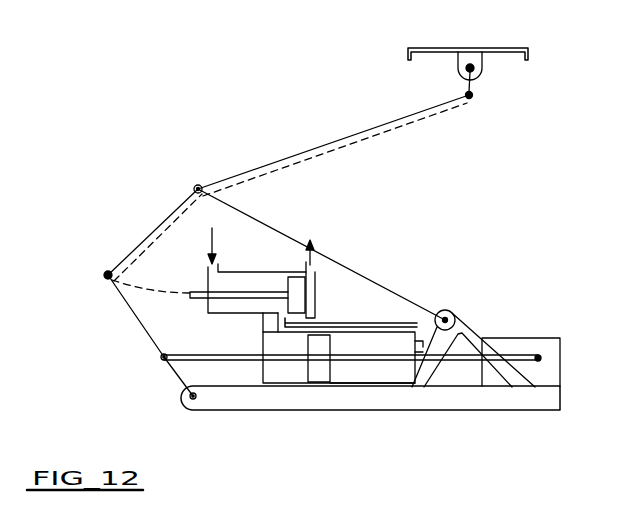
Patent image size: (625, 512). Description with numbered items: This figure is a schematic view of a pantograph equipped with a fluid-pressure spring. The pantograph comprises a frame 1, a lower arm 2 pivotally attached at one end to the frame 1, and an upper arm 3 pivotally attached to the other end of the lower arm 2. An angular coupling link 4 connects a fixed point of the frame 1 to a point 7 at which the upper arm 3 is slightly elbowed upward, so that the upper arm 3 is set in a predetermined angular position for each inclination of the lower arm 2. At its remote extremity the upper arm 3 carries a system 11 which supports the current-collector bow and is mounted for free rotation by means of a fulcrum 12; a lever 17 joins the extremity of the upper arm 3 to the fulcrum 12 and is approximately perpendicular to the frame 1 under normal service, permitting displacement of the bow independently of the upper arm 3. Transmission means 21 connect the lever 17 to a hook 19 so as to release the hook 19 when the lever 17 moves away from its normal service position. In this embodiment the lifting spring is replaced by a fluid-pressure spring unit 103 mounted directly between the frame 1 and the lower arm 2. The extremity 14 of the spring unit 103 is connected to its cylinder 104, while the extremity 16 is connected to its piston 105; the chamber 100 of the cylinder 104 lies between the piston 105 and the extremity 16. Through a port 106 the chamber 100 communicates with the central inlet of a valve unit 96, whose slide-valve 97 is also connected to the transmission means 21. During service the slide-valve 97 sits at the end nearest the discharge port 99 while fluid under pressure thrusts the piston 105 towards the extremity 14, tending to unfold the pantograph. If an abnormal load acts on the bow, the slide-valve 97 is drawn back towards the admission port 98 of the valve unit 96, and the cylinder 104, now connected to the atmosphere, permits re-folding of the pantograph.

The frame 1 is at (443, 400).
The lower arm 2 is at (112, 290).
The upper arm 3 is at (337, 142).
The angular coupling link 4 is at (262, 224).
The point 7 is at (198, 188).
The system 11 is at (482, 60).
The fulcrum 12 is at (464, 69).
The extremity 14 is at (540, 352).
The extremity 16 is at (161, 360).
The lever 17 is at (474, 93).
The hook 19 is at (518, 48).
The transmission means 21 is at (375, 138).
The valve unit 96 is at (320, 299).
The slide-valve 97 is at (300, 272).
The admission port 98 is at (220, 268).
The discharge port 99 is at (325, 280).
The chamber 100 is at (278, 373).
The fluid-pressure spring unit 103 is at (256, 338).
The cylinder 104 is at (377, 373).
The piston 105 is at (318, 372).
The port 106 is at (285, 326).